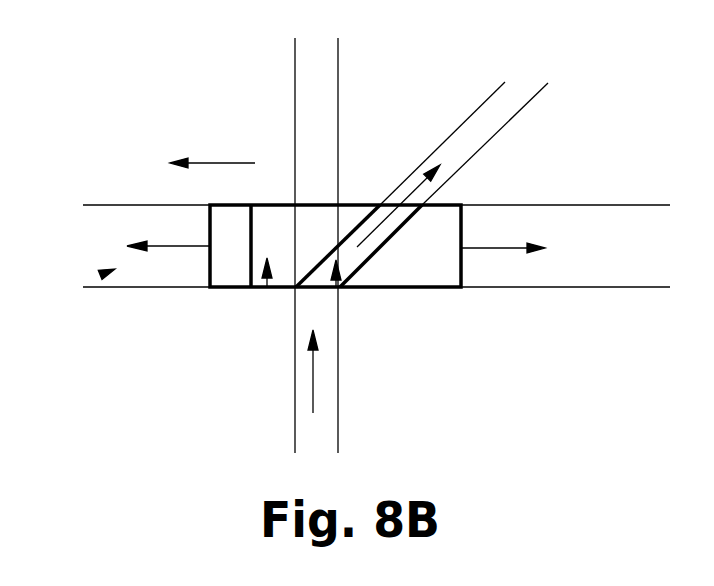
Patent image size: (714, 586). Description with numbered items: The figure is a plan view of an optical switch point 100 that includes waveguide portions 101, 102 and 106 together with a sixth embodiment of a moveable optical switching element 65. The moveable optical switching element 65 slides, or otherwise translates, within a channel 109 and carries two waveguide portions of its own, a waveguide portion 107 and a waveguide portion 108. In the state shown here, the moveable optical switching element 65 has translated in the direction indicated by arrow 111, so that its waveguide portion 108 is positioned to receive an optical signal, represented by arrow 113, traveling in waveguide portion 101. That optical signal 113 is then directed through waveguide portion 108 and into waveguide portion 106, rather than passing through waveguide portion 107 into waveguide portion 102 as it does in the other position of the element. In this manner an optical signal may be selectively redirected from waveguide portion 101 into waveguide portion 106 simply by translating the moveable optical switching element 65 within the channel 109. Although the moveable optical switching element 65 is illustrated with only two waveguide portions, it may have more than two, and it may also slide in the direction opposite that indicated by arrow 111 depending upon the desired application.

The optical switch point 100 is at (158, 50).
The moveable optical switching element 65 is at (443, 292).
The waveguide portion 101 is at (337, 363).
The waveguide portion 102 is at (340, 87).
The waveguide portion 106 is at (495, 133).
The waveguide portion 107 is at (260, 297).
The waveguide portion 108 is at (337, 293).
The channel 109 is at (108, 272).
The arrow 111 is at (205, 160).
The arrow 113 is at (313, 373).